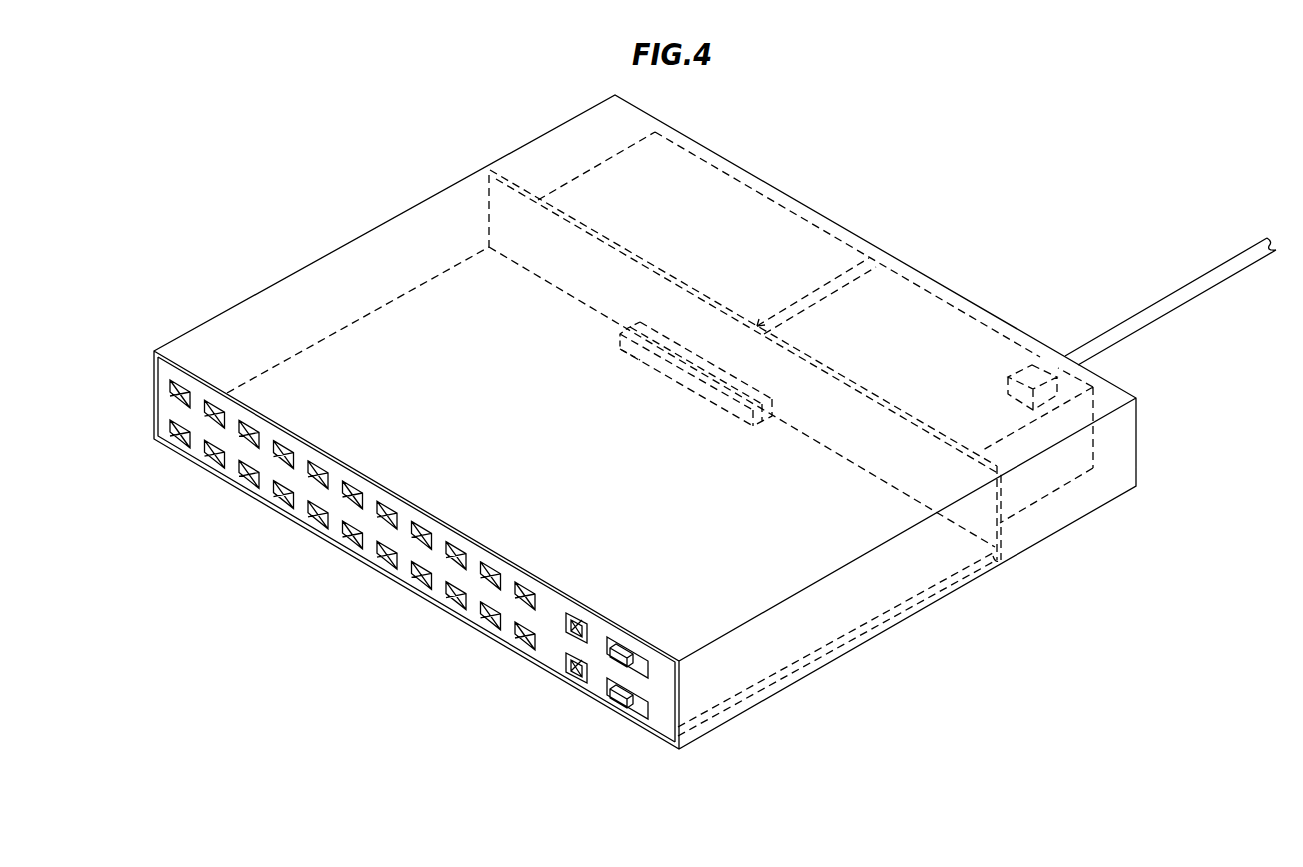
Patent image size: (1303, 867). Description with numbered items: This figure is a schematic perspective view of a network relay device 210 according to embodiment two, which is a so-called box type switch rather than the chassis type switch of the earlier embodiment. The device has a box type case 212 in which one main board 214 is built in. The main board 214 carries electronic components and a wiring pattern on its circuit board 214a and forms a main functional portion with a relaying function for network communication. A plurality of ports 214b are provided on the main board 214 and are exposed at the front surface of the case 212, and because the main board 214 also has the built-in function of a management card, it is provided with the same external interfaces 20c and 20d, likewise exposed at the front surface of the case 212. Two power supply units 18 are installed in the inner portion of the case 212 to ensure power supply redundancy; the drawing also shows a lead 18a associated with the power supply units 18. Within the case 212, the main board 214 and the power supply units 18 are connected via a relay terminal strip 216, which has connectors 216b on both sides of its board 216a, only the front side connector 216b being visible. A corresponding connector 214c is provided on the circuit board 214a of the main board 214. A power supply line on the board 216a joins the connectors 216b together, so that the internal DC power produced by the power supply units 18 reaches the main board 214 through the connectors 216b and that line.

The network relay device 210 is at (645, 422).
The box type case 212 is at (337, 262).
The main board 214 is at (262, 372).
The circuit board 214a is at (333, 355).
The ports 214b is at (217, 455).
The connector 214c is at (650, 361).
The relay terminal strip 216 is at (511, 178).
The board 216a is at (518, 218).
The connectors 216b is at (703, 367).
The power supply units 18 is at (743, 171).
The cable lead 18a is at (1177, 298).
The external interface 20c is at (622, 663).
The external interface 20d is at (572, 637).